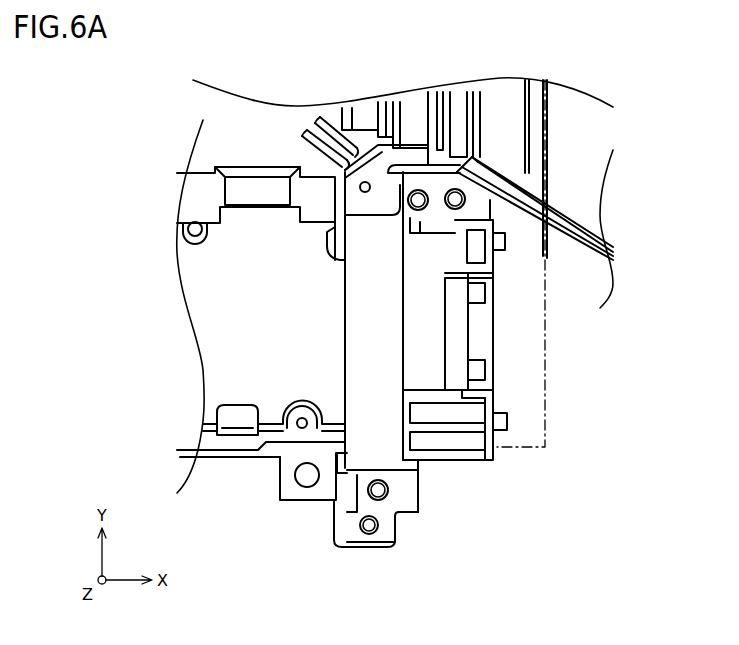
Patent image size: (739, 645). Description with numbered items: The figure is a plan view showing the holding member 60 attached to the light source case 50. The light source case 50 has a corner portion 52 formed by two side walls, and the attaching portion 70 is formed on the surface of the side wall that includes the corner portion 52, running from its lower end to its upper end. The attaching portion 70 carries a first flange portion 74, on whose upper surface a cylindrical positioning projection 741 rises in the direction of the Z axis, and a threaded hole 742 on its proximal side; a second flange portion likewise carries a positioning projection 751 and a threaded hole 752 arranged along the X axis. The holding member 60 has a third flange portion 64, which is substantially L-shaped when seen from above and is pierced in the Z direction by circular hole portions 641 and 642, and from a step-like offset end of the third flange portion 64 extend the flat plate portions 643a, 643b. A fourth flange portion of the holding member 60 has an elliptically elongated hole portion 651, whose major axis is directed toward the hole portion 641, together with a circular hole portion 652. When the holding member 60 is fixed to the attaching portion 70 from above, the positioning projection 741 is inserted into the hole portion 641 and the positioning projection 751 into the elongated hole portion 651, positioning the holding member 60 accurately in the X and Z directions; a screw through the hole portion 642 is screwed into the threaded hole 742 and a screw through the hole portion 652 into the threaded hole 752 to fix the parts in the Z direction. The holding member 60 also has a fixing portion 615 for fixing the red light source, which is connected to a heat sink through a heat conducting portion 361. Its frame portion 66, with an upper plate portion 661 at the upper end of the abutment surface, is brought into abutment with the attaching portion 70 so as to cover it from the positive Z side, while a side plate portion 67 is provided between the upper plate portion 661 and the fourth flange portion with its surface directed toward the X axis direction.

The light source case 50 is at (250, 457).
The corner portion 52 is at (412, 520).
The holding member 60 is at (345, 330).
The third flange portion 64 is at (353, 525).
The frame portion 66 is at (357, 297).
The upper plate portion 661 is at (358, 313).
The side plate portion 67 is at (395, 180).
The attaching portion 70 is at (407, 528).
The first flange portion 74 is at (338, 538).
The heat conducting portion 361 is at (545, 390).
The fixing portion 615 is at (483, 340).
The hole portion 641 is at (374, 537).
The hole portion 642 is at (390, 488).
The flat plate portion 643a is at (401, 532).
The flat plate portion 643b is at (419, 498).
The elongated hole portion 651 is at (419, 190).
The hole portion 652 is at (478, 160).
The positioning projection 741 is at (369, 527).
The threaded hole 742 is at (392, 494).
The positioning projection 751 is at (411, 191).
The threaded hole 752 is at (460, 190).